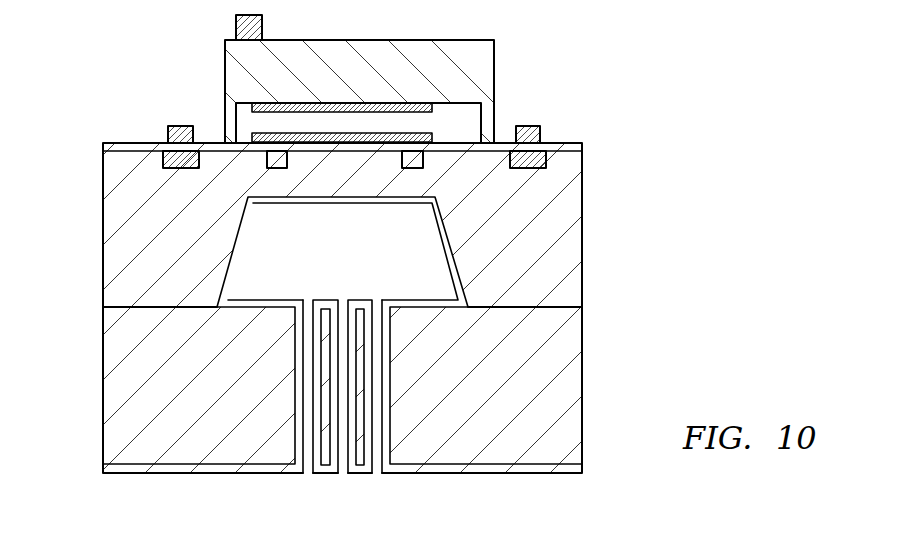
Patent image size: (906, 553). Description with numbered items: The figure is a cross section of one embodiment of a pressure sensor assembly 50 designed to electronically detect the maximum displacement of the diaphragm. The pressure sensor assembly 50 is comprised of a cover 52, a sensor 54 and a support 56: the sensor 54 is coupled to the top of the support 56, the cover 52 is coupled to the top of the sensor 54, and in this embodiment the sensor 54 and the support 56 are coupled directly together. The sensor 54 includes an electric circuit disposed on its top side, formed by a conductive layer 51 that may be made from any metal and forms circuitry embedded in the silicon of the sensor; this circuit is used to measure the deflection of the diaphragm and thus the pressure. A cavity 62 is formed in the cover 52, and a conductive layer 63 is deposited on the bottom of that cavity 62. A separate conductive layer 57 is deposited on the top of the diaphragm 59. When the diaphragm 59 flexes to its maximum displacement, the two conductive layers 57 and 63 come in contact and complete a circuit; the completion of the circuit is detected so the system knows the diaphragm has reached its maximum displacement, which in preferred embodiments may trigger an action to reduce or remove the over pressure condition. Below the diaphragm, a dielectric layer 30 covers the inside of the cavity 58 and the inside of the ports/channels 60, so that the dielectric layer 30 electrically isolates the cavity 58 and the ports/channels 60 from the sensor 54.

The dielectric layer 30 is at (460, 277).
The pressure sensor assembly 50 is at (656, 116).
The conductive layer 51 is at (178, 131).
The cover 52 is at (468, 70).
The sensor 54 is at (553, 230).
The support 56 is at (552, 362).
The conductive layer 57 is at (415, 137).
The cavity 58 is at (270, 257).
The diaphragm 59 is at (345, 170).
The ports/channels 60 is at (378, 476).
The cavity 62 is at (357, 122).
The conductive layer 63 is at (397, 103).